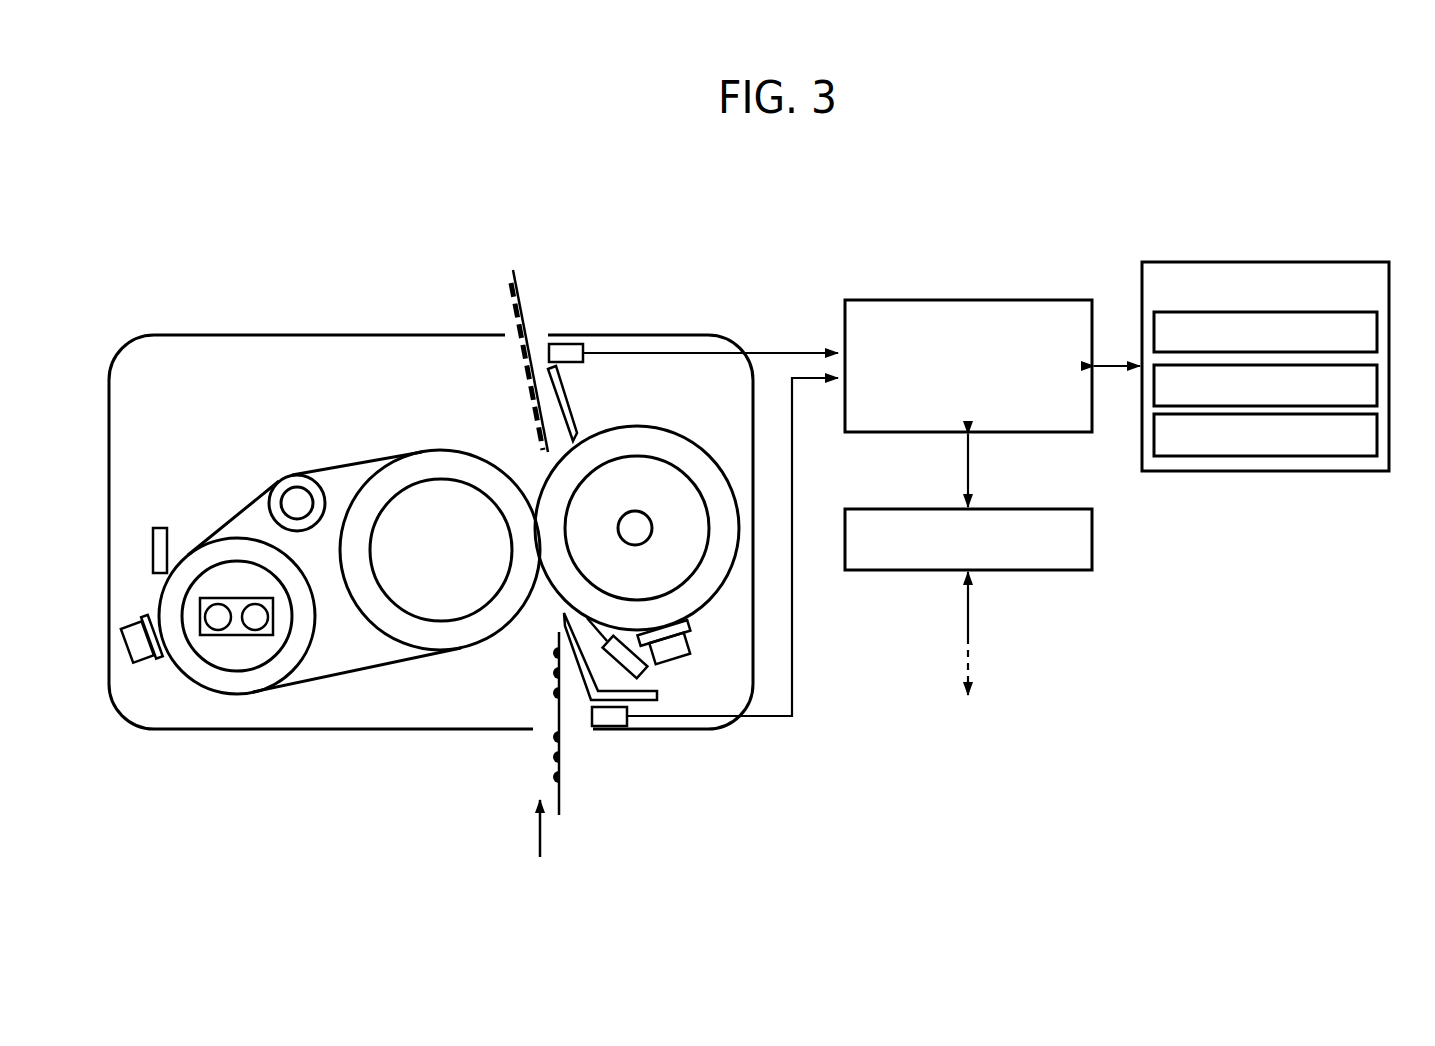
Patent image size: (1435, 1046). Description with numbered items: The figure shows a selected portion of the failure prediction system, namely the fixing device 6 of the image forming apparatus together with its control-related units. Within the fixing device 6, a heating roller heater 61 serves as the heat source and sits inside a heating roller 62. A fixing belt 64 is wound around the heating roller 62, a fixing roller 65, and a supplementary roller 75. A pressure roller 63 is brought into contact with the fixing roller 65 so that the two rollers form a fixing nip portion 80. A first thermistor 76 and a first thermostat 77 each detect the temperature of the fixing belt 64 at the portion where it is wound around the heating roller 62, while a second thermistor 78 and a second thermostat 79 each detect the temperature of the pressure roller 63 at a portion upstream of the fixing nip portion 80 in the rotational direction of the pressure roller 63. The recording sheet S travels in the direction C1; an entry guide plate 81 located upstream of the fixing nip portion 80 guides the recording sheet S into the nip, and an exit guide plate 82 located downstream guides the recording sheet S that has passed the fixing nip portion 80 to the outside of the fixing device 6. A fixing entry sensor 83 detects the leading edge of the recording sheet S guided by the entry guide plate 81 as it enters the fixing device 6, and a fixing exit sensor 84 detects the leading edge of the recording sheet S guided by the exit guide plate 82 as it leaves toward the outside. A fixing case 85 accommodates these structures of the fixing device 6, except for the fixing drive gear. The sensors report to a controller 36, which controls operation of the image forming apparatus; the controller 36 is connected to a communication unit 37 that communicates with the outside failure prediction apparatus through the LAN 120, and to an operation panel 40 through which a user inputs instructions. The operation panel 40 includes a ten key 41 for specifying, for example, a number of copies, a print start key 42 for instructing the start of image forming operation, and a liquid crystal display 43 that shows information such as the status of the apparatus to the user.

The fixing device 6 is at (728, 243).
The controller 36 is at (1043, 300).
The communication unit 37 is at (1045, 509).
The operation panel 40 is at (1340, 262).
The ten key 41 is at (1377, 331).
The print start key 42 is at (1377, 385).
The liquid crystal display (LCD) 43 is at (1377, 435).
The heating roller heater 61 is at (225, 636).
The heating roller 62 is at (293, 669).
The pressure roller 63 is at (690, 437).
The fixing belt 64 is at (355, 455).
The fixing roller 65 is at (354, 603).
The supplementary roller 75 is at (311, 529).
The first thermistor 76 is at (158, 528).
The first thermostat 77 is at (129, 620).
The second thermistor 78 is at (648, 673).
The second thermostat 79 is at (690, 640).
The fixing nip portion 80 is at (545, 598).
The entry guide plate 81 is at (657, 696).
The exit guide plate 82 is at (565, 398).
The fixing entry sensor 83 is at (592, 717).
The fixing exit sensor 84 is at (583, 360).
The fixing case 85 is at (425, 335).
The LAN 120 is at (970, 607).
The recording sheet S is at (534, 355).
The direction C1 is at (523, 828).